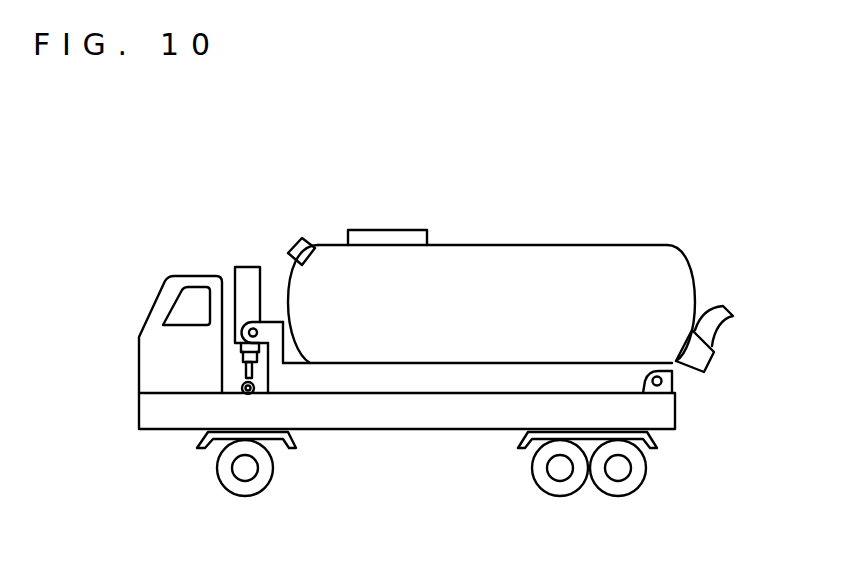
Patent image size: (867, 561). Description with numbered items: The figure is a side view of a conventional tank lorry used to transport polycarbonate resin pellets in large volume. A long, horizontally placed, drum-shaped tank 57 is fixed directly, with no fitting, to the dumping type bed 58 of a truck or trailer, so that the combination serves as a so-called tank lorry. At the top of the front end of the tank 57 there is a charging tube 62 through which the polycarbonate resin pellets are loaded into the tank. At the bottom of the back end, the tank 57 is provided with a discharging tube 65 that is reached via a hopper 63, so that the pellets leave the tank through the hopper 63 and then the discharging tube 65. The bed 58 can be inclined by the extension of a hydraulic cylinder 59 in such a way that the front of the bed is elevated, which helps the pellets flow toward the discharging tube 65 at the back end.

The tank 57 is at (515, 265).
The dumping type bed 58 is at (392, 382).
The hydraulic cylinder 59 is at (245, 267).
The charging tube 62 is at (298, 241).
The hopper 63 is at (706, 372).
The discharging tube 65 is at (723, 320).